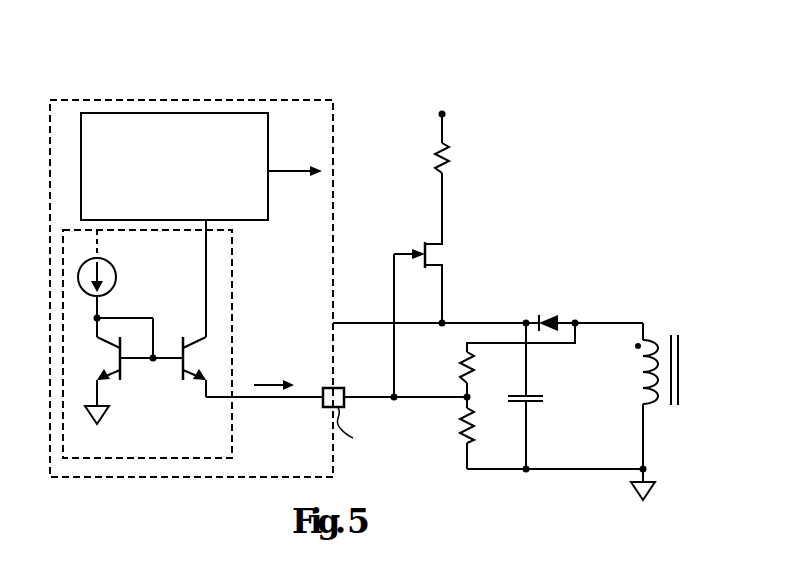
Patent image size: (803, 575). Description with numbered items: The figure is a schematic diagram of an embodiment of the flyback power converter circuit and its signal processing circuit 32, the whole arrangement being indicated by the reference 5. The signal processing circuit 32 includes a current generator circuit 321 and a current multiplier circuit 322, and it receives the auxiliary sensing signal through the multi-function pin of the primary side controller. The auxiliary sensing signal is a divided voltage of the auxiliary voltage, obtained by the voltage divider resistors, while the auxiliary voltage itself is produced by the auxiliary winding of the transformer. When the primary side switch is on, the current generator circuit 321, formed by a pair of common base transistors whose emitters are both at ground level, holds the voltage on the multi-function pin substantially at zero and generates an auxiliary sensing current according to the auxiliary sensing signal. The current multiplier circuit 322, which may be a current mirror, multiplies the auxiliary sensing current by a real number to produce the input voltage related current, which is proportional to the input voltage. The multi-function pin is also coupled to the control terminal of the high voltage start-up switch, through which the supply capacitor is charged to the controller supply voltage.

The power converter circuit 5 is at (281, 43).
The signal processing circuit 32 is at (319, 464).
The current generator circuit 321 is at (212, 447).
The current multiplier circuit 322 is at (188, 207).